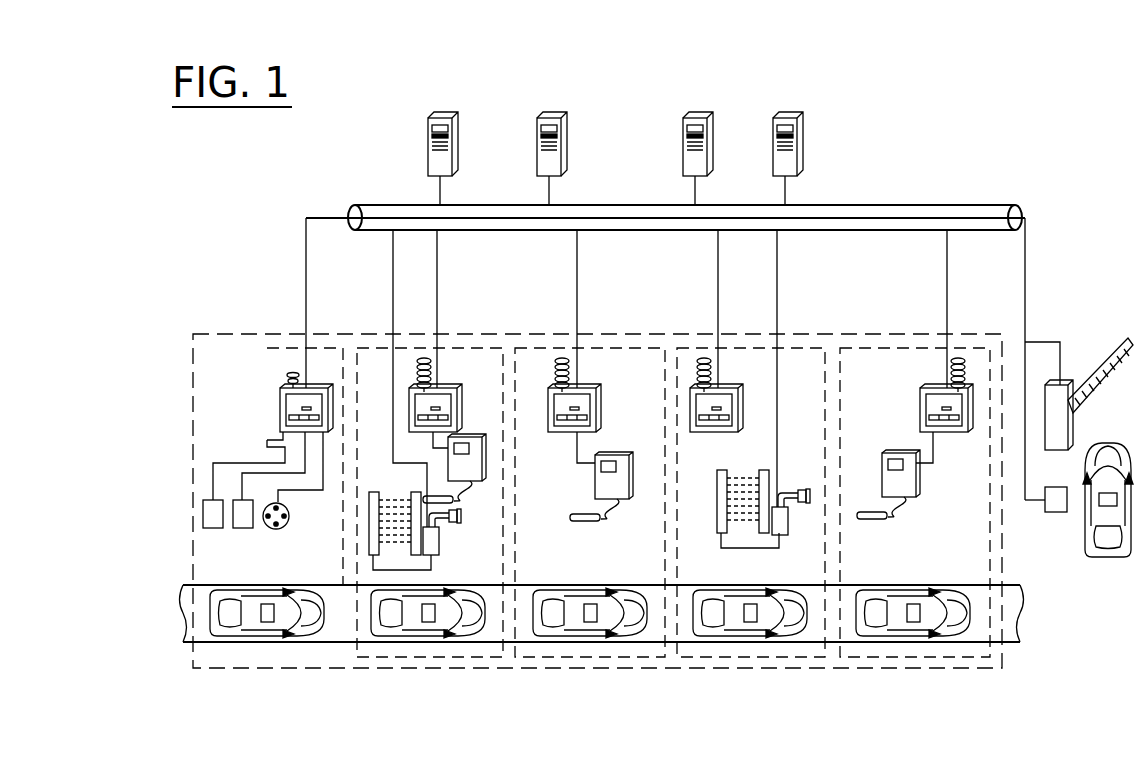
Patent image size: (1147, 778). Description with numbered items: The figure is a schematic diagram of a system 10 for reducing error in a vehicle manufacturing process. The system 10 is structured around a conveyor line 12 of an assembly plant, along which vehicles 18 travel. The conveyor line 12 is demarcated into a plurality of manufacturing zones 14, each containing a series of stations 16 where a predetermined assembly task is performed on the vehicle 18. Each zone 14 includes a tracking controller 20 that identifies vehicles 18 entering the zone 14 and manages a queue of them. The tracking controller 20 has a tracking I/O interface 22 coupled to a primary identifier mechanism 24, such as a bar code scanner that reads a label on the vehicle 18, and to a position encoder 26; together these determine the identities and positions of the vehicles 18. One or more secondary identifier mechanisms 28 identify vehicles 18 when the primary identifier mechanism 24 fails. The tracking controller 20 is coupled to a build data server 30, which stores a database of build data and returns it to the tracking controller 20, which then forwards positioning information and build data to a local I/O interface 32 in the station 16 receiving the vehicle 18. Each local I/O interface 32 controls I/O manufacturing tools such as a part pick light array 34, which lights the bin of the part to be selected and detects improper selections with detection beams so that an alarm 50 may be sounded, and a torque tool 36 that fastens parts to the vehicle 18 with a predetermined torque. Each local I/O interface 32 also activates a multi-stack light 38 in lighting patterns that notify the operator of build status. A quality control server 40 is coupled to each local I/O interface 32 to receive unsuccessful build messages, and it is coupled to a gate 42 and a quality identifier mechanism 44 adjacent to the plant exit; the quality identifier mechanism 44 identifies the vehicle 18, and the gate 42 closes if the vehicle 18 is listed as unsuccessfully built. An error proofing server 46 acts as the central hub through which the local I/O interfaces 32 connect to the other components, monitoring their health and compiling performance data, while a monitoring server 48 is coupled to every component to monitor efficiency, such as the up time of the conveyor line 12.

The system 10 is at (310, 196).
The conveyor line 12 is at (235, 643).
The manufacturing zone 14 is at (245, 324).
The station 16 is at (372, 348).
The vehicle 18 is at (275, 636).
The tracking controller 20 is at (263, 367).
The tracking I/O interface 22 is at (280, 404).
The primary identifier mechanism 24 is at (242, 528).
The position encoder 26 is at (290, 517).
The secondary identifier mechanism 28 is at (213, 528).
The build data server 30 is at (537, 128).
The local I/O interface 32 is at (458, 400).
The part pick light array 34 is at (372, 492).
The torque tool 36 is at (478, 503).
The multi-stack light 38 is at (424, 358).
The quality control server 40 is at (803, 128).
The gate 42 is at (1060, 383).
The quality identifier mechanism 44 is at (1056, 512).
The error proofing server 46 is at (428, 128).
The monitoring server 48 is at (683, 128).
The alarm 50 is at (440, 537).